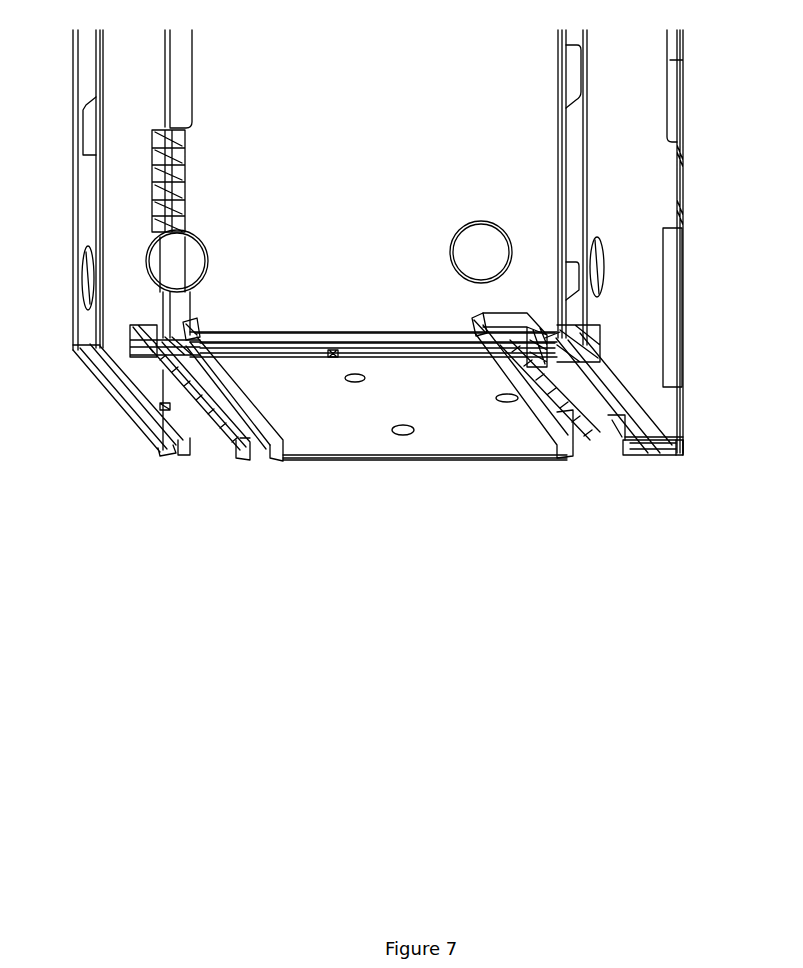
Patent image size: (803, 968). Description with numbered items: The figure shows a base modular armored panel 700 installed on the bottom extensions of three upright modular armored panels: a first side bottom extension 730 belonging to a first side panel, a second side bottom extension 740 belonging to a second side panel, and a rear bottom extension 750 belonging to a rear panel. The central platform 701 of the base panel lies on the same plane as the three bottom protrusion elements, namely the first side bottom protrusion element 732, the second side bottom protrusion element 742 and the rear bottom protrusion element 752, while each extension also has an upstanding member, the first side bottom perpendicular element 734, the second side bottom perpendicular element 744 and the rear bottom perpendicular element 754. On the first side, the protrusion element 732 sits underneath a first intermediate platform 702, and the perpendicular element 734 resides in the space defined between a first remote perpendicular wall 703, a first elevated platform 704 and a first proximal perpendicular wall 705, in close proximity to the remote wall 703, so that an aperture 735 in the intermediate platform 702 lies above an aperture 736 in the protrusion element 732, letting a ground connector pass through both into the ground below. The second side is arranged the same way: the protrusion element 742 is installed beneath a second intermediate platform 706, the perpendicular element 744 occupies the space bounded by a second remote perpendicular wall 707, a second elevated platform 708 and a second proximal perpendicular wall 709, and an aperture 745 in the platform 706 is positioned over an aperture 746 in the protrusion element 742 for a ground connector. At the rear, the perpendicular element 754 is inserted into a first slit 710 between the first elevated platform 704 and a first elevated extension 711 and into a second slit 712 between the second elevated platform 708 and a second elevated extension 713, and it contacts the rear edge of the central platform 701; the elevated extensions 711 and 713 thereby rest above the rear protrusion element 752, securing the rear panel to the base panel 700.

The base modular armored panel 700 is at (435, 471).
The central platform 701 is at (410, 460).
The first intermediate platform 702 is at (204, 466).
The first remote perpendicular wall 703 is at (230, 457).
The first elevated platform 704 is at (247, 442).
The first proximal perpendicular wall 705 is at (276, 448).
The second intermediate platform 706 is at (620, 452).
The second remote perpendicular wall 707 is at (647, 403).
The second elevated platform 708 is at (583, 428).
The second proximal perpendicular wall 709 is at (558, 425).
The first slit 710 is at (205, 330).
The first elevated extension 711 is at (173, 330).
The second slit 712 is at (462, 320).
The second elevated extension 713 is at (507, 330).
The first side bottom extension 730 is at (92, 424).
The first side bottom protrusion element 732 is at (115, 414).
The first side bottom perpendicular element 734 is at (190, 430).
The aperture 735 is at (178, 442).
The aperture 736 is at (180, 452).
The second side bottom extension 740 is at (703, 446).
The second side bottom protrusion element 742 is at (643, 458).
The second side bottom perpendicular element 744 is at (616, 447).
The aperture 745 is at (634, 436).
The aperture 746 is at (634, 450).
The rear bottom extension 750 is at (357, 322).
The rear bottom protrusion element 752 is at (312, 357).
The rear bottom perpendicular element 754 is at (292, 333).